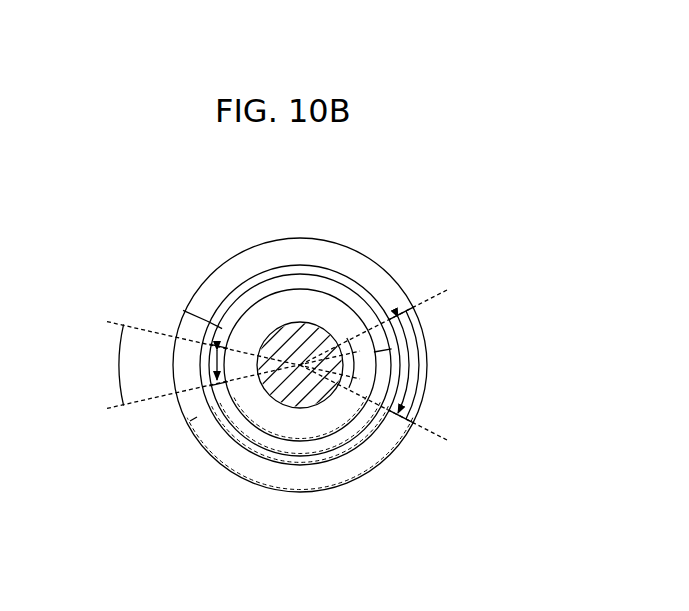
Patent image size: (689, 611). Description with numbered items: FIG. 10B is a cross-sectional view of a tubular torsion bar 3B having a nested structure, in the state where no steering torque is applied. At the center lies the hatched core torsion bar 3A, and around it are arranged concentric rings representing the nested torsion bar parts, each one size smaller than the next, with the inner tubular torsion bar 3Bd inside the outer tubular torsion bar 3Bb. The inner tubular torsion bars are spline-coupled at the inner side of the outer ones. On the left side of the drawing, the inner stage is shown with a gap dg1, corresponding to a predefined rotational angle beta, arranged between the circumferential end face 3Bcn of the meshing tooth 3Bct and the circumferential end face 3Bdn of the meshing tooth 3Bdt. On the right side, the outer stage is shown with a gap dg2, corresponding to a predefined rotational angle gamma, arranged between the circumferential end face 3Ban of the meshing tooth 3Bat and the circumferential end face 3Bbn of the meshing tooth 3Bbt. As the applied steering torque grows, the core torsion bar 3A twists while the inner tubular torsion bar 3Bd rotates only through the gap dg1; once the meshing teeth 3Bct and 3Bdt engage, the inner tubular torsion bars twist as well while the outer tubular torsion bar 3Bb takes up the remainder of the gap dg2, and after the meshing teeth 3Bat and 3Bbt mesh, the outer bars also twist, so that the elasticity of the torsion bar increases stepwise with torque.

The core torsion bar 3A is at (283, 324).
The tubular torsion bar 3B is at (348, 242).
The outer tubular torsion bar 3Bb is at (212, 272).
The circumferential end face of meshing tooth 3Bbt 3Bbn is at (190, 312).
The meshing tooth of outer tubular torsion bar 3Bb 3Bbt is at (378, 274).
The inner tubular torsion bar 3Bd is at (300, 264).
The meshing tooth of inner tubular torsion bar 3Bd 3Bdt is at (207, 319).
The circumferential end face of meshing tooth 3Bdt 3Bdn is at (385, 348).
The circumferential end face of meshing tooth 3Bat 3Ban is at (197, 417).
The meshing tooth of outer tubular torsion bar 3Ba 3Bat is at (296, 478).
The meshing tooth of inner tubular torsion bar 3Bc 3Bct is at (378, 437).
The circumferential end face of meshing tooth 3Bct 3Bcn is at (418, 390).
The gap dg1 is at (213, 363).
The gap dg2 is at (412, 342).